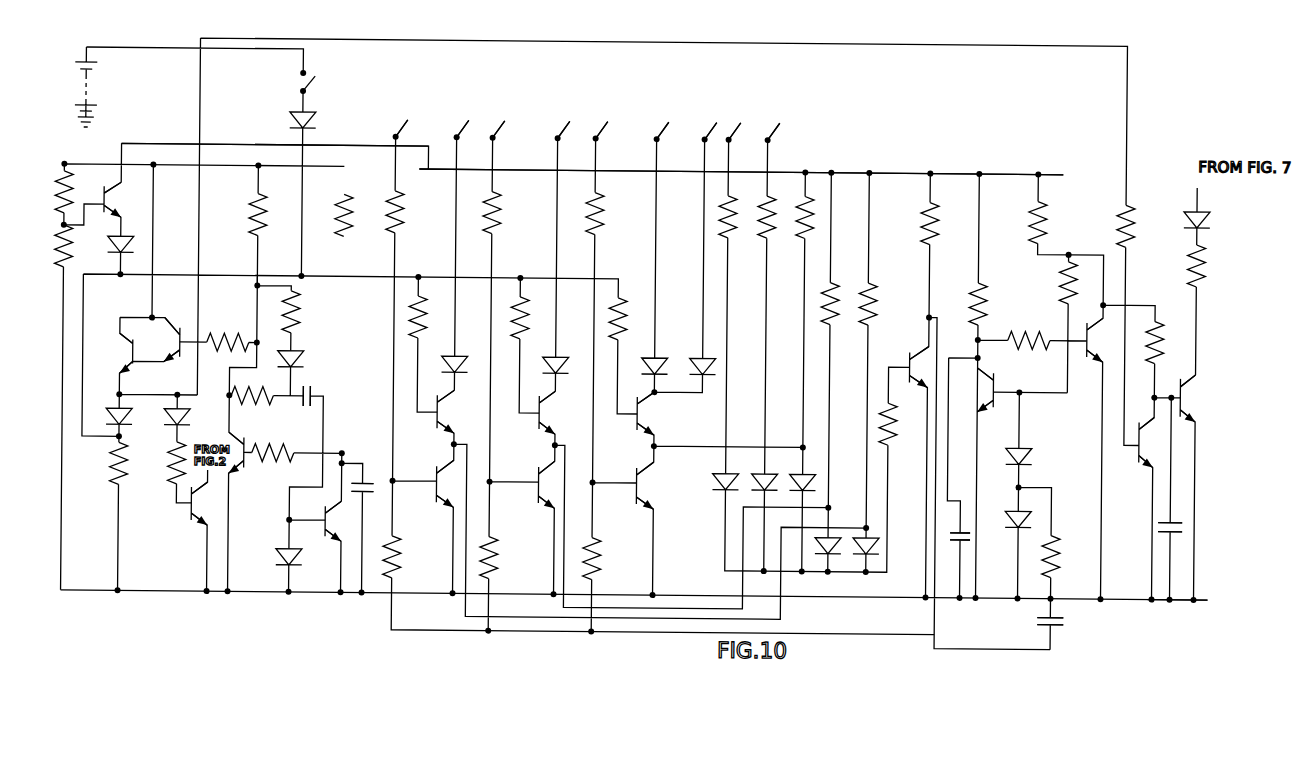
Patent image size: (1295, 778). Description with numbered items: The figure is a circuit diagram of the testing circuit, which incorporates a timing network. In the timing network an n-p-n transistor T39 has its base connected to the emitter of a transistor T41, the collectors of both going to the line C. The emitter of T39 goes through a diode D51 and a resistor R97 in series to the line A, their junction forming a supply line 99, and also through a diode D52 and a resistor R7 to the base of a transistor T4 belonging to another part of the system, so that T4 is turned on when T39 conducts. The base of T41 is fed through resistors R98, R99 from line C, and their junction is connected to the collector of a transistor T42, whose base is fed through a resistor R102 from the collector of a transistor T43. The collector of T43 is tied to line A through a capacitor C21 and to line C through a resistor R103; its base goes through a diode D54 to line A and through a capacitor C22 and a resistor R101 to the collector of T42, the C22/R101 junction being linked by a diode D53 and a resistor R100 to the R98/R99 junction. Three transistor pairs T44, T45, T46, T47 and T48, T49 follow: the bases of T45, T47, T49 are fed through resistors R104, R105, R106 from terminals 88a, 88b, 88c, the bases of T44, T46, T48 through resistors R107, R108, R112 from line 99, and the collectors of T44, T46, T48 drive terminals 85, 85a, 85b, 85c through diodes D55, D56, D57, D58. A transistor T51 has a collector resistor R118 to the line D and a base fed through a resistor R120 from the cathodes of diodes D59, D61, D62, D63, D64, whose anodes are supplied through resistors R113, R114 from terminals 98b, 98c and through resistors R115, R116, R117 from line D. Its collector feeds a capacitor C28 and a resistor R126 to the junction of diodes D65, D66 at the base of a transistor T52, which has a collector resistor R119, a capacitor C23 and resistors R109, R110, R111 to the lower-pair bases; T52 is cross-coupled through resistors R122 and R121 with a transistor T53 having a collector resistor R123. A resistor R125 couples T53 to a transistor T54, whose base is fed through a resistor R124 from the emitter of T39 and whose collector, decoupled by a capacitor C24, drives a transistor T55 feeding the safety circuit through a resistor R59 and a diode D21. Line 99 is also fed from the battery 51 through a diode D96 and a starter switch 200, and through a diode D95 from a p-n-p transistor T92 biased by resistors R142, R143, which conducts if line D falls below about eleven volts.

The battery 51 is at (85, 96).
The starter switch 200 is at (305, 78).
The diode D96 is at (305, 116).
The resistor R142 is at (72, 177).
The resistor R143 is at (102, 261).
The line C is at (203, 148).
The p-n-p transistor T92 is at (122, 203).
The diode D95 is at (135, 247).
The resistor R99 is at (253, 217).
The resistor R103 is at (367, 173).
The supply line 99 is at (273, 266).
The resistor R100 is at (303, 332).
The diode D53 is at (293, 363).
The n-p-n transistor T41 is at (183, 322).
The n-p-n transistor T39 is at (120, 364).
The resistor R98 is at (220, 341).
The diode D52 is at (173, 410).
The diode D51 is at (117, 441).
The resistor R97 is at (118, 477).
The resistor R7 is at (177, 477).
The transistor T4 is at (199, 528).
The resistor R101 is at (242, 404).
The capacitor C22 is at (307, 401).
The n-p-n transistor T42 is at (245, 482).
The resistor R102 is at (285, 467).
The diode D54 is at (290, 551).
The n-p-n transistor T43 is at (330, 552).
The capacitor C21 is at (366, 480).
The terminal 88a is at (421, 110).
The terminal 85 is at (470, 115).
The terminal 88b is at (517, 111).
The terminal 85a is at (575, 111).
The terminal 88c is at (618, 112).
The terminal 85b is at (675, 112).
The terminal 85c is at (719, 113).
The terminal 98b is at (755, 113).
The terminal 98c is at (796, 114).
The resistor R104 is at (410, 222).
The resistor R105 is at (498, 223).
The resistor R106 is at (603, 227).
The resistor R107 is at (421, 300).
The resistor R108 is at (523, 300).
The resistor R112 is at (633, 277).
The diode D55 is at (457, 355).
The diode D56 is at (559, 355).
The diode D57 is at (657, 358).
The diode D58 is at (700, 380).
The n-p-n transistor T44 is at (427, 423).
The n-p-n transistor T46 is at (529, 423).
The n-p-n transistor T48 is at (627, 423).
The n-p-n transistor T45 is at (427, 493).
The n-p-n transistor T47 is at (529, 493).
The n-p-n transistor T49 is at (627, 493).
The resistor R109 is at (396, 575).
The resistor R110 is at (498, 567).
The resistor R111 is at (597, 567).
The resistor R113 is at (733, 238).
The resistor R114 is at (768, 196).
The resistor R115 is at (807, 197).
The resistor R116 is at (822, 297).
The resistor R117 is at (867, 289).
The resistor R118 is at (931, 203).
The resistor R119 is at (980, 284).
The resistor R120 is at (891, 391).
The n-p-n transistor T51 is at (927, 355).
The diode D59 is at (716, 488).
The diode D61 is at (757, 492).
The diode D62 is at (807, 473).
The diode D63 is at (826, 556).
The diode D64 is at (873, 556).
The n-p-n transistor T52 is at (990, 401).
The resistor R121 is at (1023, 343).
The resistor R122 is at (1046, 282).
The resistor R123 is at (1045, 234).
The n-p-n transistor T53 is at (1096, 360).
The diode D65 is at (1033, 454).
The diode D66 is at (1030, 513).
The capacitor C23 is at (967, 540).
The resistor R126 is at (1057, 569).
The capacitor C28 is at (1038, 619).
The resistor R124 is at (1137, 211).
The resistor R125 is at (1163, 352).
The n-p-n transistor T54 is at (1131, 451).
The n-p-n transistor T55 is at (1188, 386).
The capacitor C24 is at (1168, 535).
The diode D21 is at (1190, 205).
The resistor R59 is at (1193, 262).
The line D is at (998, 171).
The line A is at (1168, 603).